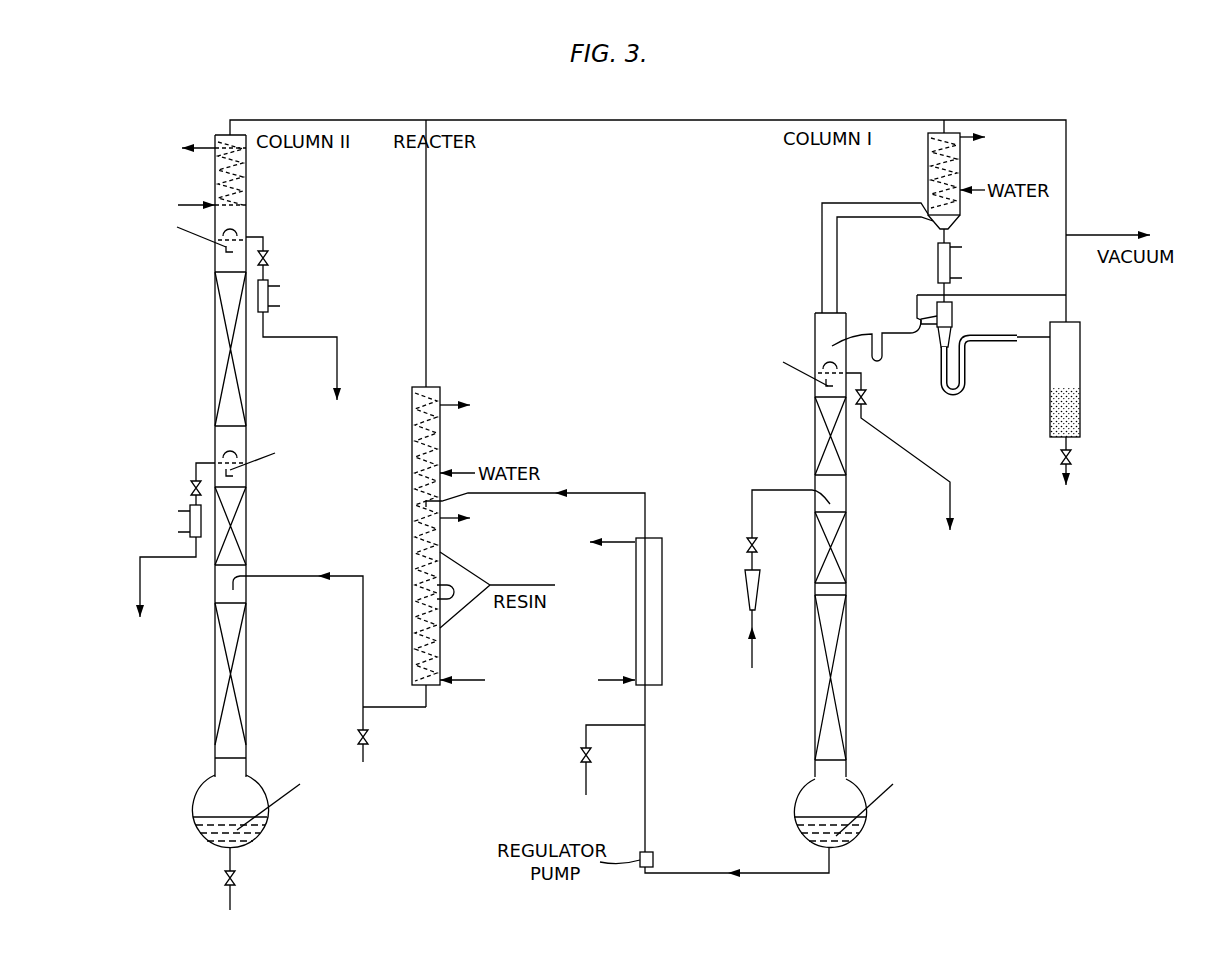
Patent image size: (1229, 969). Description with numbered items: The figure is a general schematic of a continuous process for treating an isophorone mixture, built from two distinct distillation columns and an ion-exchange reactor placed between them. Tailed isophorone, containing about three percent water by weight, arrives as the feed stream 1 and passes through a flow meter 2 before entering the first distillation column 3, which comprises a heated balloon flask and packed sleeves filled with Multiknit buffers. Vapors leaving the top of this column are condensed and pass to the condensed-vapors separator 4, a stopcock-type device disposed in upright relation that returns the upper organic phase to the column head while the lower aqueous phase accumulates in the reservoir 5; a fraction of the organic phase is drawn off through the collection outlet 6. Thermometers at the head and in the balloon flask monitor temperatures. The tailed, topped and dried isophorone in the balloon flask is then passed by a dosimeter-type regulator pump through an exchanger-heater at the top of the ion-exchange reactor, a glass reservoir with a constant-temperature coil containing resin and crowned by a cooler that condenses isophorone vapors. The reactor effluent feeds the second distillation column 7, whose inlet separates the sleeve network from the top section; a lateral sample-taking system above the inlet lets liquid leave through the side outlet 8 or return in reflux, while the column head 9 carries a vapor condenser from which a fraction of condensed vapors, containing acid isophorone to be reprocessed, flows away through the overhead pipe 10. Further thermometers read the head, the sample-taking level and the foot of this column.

The feed stream inlet 1 is at (757, 668).
The feed pump 2 is at (745, 588).
The first distillation column (Column I) 3 is at (815, 356).
The stopcock / reflux splitter 4 is at (955, 318).
The cold trap 5 is at (1082, 378).
The distillate outlet line 6 is at (957, 528).
The second distillation column (Column II) 7 is at (215, 437).
The side stream outlet line 8 is at (138, 614).
The dephlegmator / partial condenser of Column II 9 is at (215, 262).
The overhead product outlet line 10 is at (340, 386).